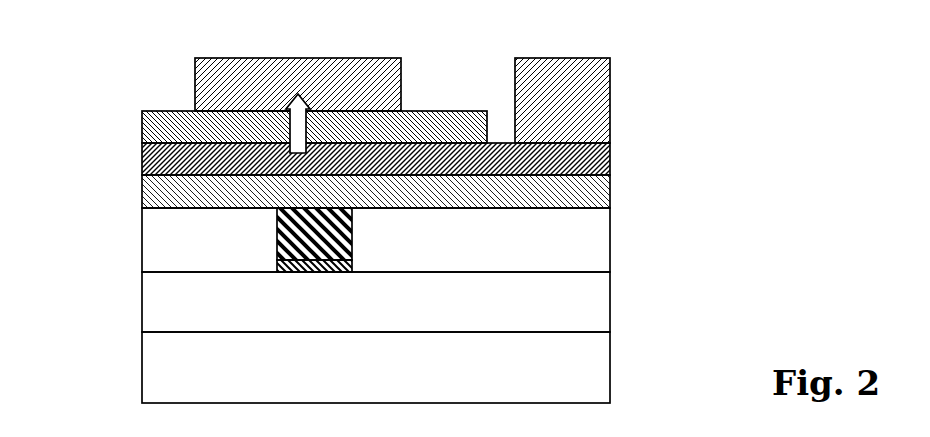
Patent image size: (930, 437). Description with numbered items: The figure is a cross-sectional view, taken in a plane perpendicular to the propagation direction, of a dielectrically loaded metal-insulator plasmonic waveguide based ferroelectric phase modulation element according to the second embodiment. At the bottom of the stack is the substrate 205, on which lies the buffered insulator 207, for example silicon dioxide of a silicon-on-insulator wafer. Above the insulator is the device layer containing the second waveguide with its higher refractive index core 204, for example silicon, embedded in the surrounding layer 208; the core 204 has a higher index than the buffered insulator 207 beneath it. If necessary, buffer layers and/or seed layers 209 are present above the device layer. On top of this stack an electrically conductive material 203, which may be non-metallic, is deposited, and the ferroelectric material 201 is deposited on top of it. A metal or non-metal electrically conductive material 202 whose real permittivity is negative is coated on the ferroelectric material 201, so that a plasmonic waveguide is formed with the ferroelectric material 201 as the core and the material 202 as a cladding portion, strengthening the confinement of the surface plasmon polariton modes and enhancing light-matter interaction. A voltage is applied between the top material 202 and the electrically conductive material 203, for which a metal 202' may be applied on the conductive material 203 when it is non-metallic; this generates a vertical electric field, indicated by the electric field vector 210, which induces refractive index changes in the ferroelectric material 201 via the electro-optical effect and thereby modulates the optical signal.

The ferroelectric material 201 is at (177, 125).
The electrical conductive material 202 is at (298, 62).
The metal 202' is at (600, 100).
The electrically conductive material 203 is at (165, 155).
The core 204 is at (332, 231).
The substrate 205 is at (165, 368).
The buffered insulator 207 is at (165, 303).
The dielectric layer 208 is at (375, 262).
The buffer layers and/or seed layers 209 is at (165, 190).
The electric field vector 210 is at (297, 132).